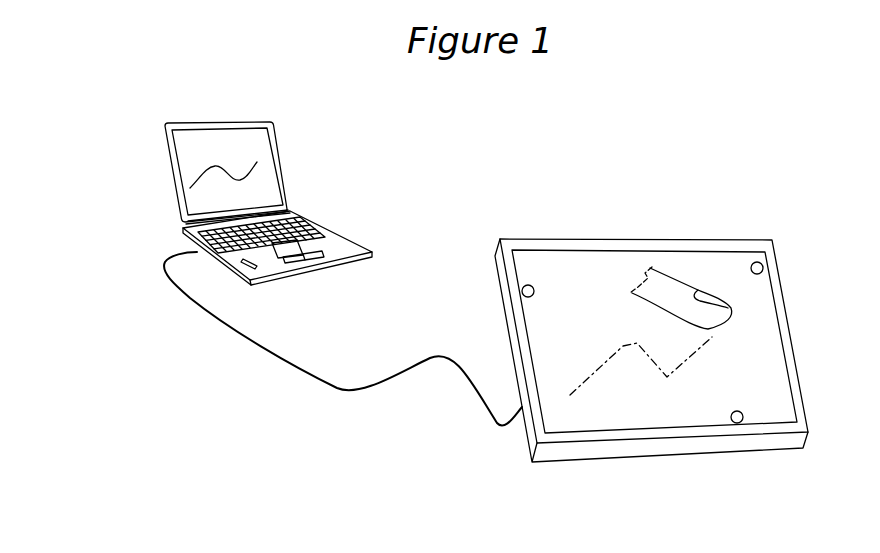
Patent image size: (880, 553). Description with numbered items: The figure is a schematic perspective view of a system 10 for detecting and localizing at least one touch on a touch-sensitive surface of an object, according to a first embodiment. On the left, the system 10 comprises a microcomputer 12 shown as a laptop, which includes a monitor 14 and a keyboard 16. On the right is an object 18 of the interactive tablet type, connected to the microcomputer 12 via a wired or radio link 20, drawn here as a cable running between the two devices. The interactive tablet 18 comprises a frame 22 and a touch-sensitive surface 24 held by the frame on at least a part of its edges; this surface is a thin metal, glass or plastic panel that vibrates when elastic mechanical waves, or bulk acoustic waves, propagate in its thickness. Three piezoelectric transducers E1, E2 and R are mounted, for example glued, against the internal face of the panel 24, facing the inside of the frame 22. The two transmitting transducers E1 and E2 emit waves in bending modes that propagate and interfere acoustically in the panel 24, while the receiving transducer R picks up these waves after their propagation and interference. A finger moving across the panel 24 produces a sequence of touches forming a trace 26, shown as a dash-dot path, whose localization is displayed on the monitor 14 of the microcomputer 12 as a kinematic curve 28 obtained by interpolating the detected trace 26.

The system for detecting and localizing at least one touch 10 is at (120, 396).
The microcomputer 12 is at (304, 177).
The monitor 14 is at (207, 143).
The keyboard 16 is at (300, 224).
The object of the interactive tablet type 18 is at (625, 220).
The wired or radio link 20 is at (310, 378).
The frame 22 is at (797, 353).
The touch-sensitive surface 24 is at (607, 413).
The trace 26 is at (623, 346).
The kinematic curve 28 is at (200, 179).
The transmitting transducer E1 is at (522, 295).
The transmitting transducer E2 is at (762, 263).
The receiving transducer R is at (738, 423).